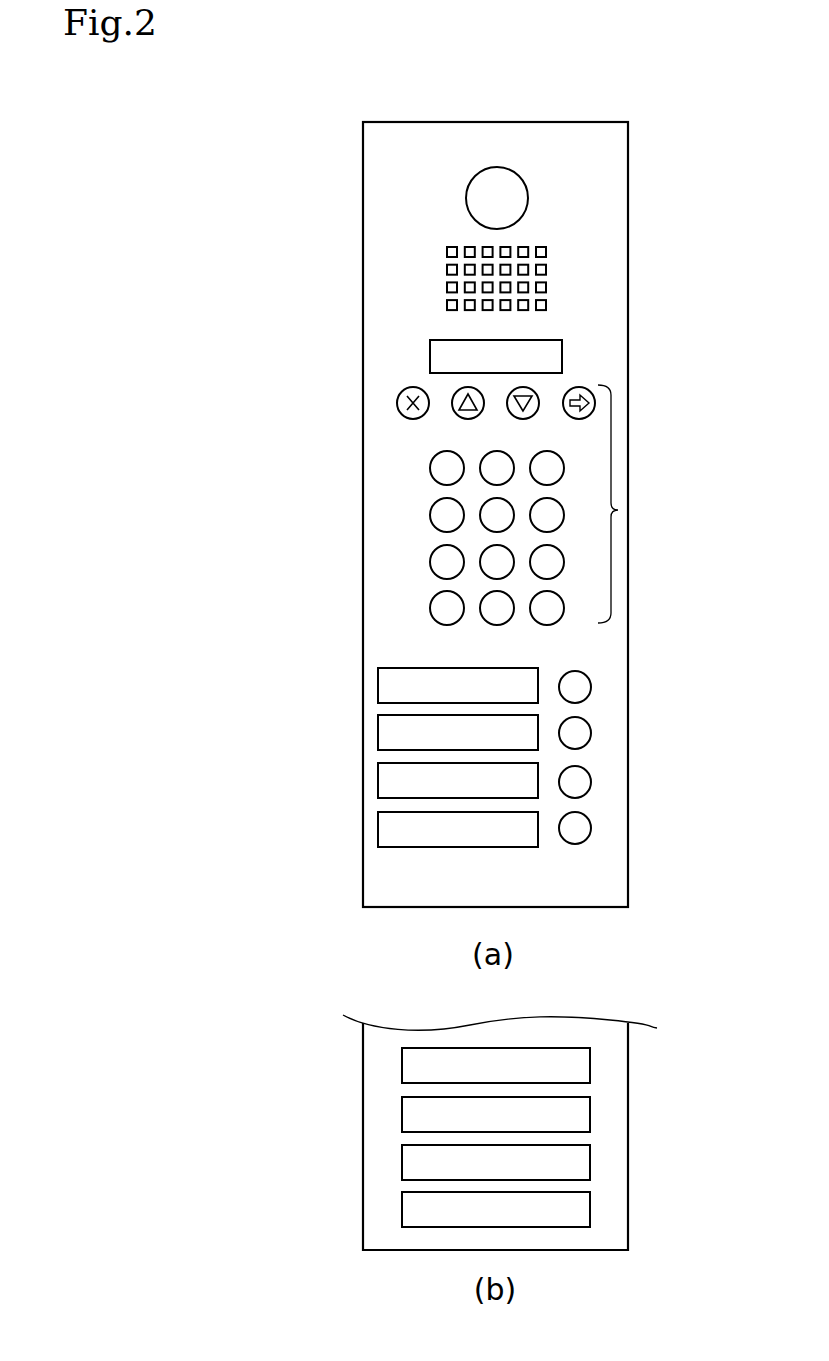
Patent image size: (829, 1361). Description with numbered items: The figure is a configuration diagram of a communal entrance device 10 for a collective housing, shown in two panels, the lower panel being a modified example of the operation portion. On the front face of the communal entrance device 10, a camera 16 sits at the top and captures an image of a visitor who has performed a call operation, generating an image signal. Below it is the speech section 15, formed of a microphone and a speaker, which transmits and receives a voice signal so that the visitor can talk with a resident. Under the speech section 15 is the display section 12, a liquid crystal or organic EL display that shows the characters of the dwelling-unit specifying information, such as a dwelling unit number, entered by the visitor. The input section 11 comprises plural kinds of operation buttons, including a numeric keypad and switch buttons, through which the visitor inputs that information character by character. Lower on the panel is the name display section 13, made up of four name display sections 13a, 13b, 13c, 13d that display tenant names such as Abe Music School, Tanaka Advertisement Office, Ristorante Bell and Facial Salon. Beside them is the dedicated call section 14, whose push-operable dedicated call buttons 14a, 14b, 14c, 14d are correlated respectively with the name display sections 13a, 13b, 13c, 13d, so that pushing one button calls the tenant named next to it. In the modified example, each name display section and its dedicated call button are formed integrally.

The communal entrance device 10 is at (537, 122).
The camera 16 is at (517, 193).
The speech section 15 is at (551, 278).
The display section 12 is at (562, 352).
The input section 11 is at (618, 510).
The name display section 13 is at (402, 947).
The name display section 13a is at (378, 697).
The name display section 13b is at (378, 739).
The name display section 13c is at (378, 780).
The name display section 13d is at (427, 1018).
The dedicated call section 14 is at (660, 950).
The dedicated call button 14a is at (584, 685).
The dedicated call button 14b is at (584, 731).
The dedicated call button 14c is at (584, 780).
The dedicated call button 14d is at (635, 1018).